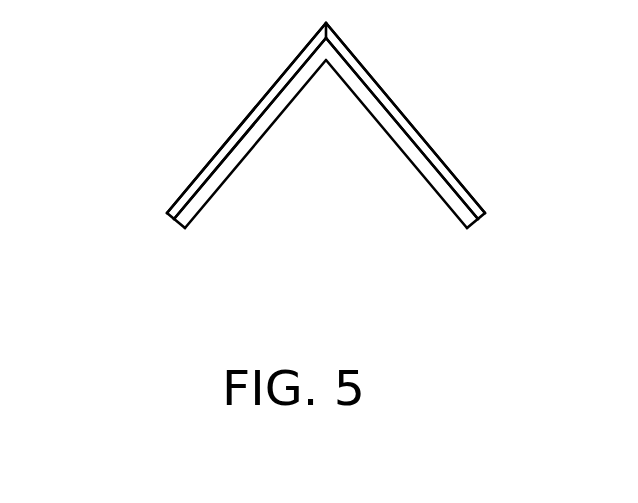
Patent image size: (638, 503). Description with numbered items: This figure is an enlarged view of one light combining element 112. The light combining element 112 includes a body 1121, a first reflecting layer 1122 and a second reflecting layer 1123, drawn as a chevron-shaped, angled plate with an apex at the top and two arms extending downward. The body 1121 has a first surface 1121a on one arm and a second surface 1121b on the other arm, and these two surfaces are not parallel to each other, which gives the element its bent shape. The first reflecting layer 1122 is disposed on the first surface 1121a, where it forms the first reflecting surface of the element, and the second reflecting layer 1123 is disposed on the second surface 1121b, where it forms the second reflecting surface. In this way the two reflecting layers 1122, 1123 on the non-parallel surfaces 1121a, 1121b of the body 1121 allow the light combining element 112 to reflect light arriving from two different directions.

The light combining element 112 is at (424, 255).
The body 1121 is at (383, 120).
The first surface 1121a is at (220, 160).
The second surface 1121b is at (423, 152).
The first reflecting layer 1122 is at (270, 97).
The second reflecting layer 1123 is at (382, 92).